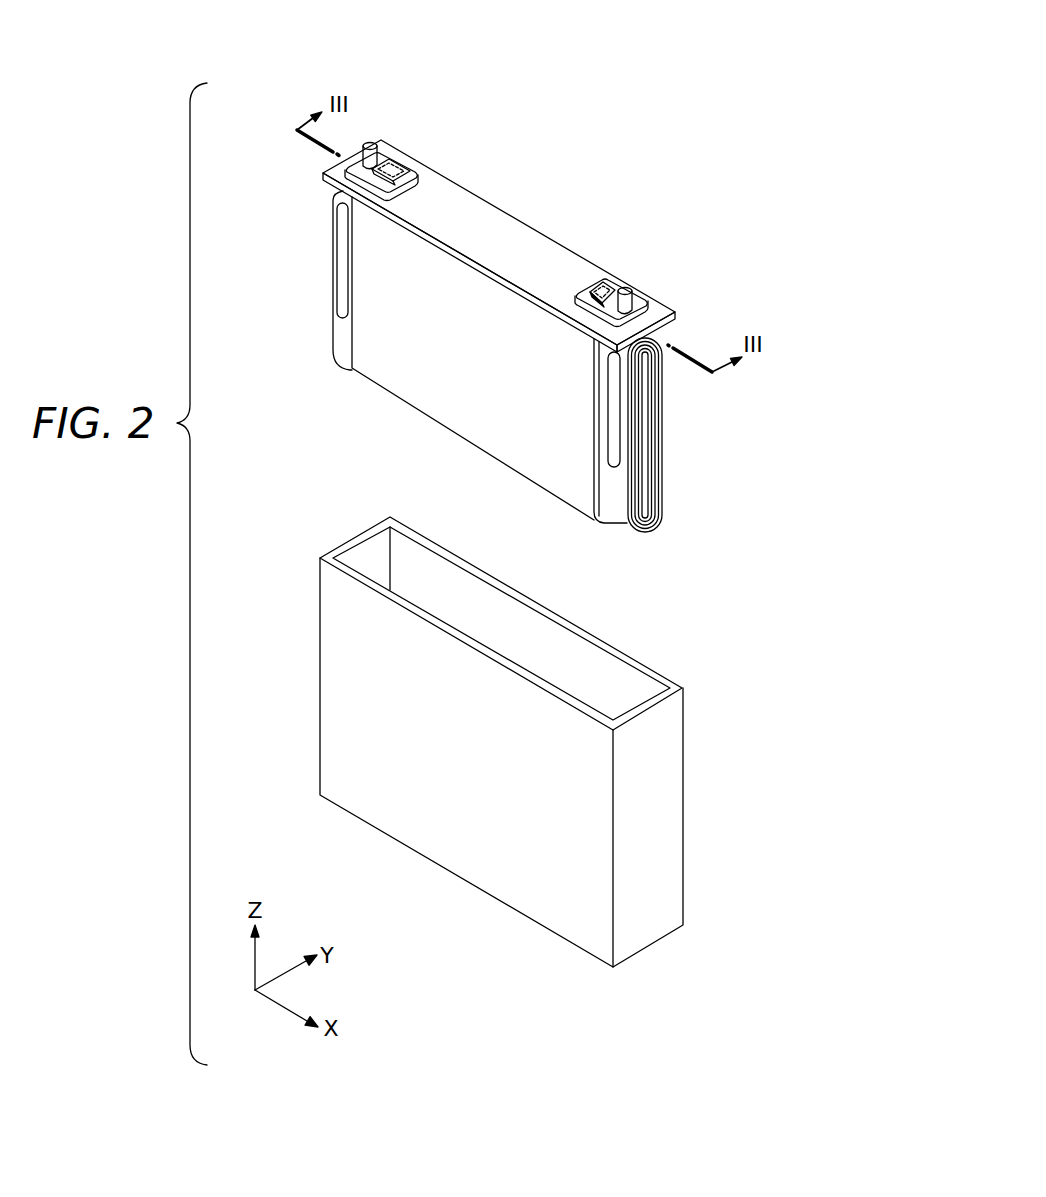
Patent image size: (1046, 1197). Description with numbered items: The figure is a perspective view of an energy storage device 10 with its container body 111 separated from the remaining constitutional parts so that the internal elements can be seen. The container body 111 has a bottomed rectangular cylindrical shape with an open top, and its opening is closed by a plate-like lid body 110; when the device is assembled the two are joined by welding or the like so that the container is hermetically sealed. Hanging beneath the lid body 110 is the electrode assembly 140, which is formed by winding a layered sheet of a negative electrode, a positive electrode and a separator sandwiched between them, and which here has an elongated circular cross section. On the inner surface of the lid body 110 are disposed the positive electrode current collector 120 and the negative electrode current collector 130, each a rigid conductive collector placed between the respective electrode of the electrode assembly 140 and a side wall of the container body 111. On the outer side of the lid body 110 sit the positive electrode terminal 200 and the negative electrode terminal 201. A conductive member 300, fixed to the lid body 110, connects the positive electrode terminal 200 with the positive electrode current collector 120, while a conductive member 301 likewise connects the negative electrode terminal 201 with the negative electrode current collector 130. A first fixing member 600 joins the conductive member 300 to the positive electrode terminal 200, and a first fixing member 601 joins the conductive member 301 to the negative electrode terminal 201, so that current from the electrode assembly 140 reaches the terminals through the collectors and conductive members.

The energy storage device 10 is at (695, 65).
The lid body 110 is at (492, 218).
The container body 111 is at (667, 801).
The positive electrode current collector 120 is at (612, 410).
The negative electrode current collector 130 is at (342, 253).
The electrode assembly 140 is at (660, 438).
The positive electrode terminal 200 is at (623, 277).
The negative electrode terminal 201 is at (368, 138).
The conductive member 300 is at (603, 282).
The conductive member 301 is at (395, 160).
The first fixing member 600 is at (608, 282).
The first fixing member 601 is at (403, 168).